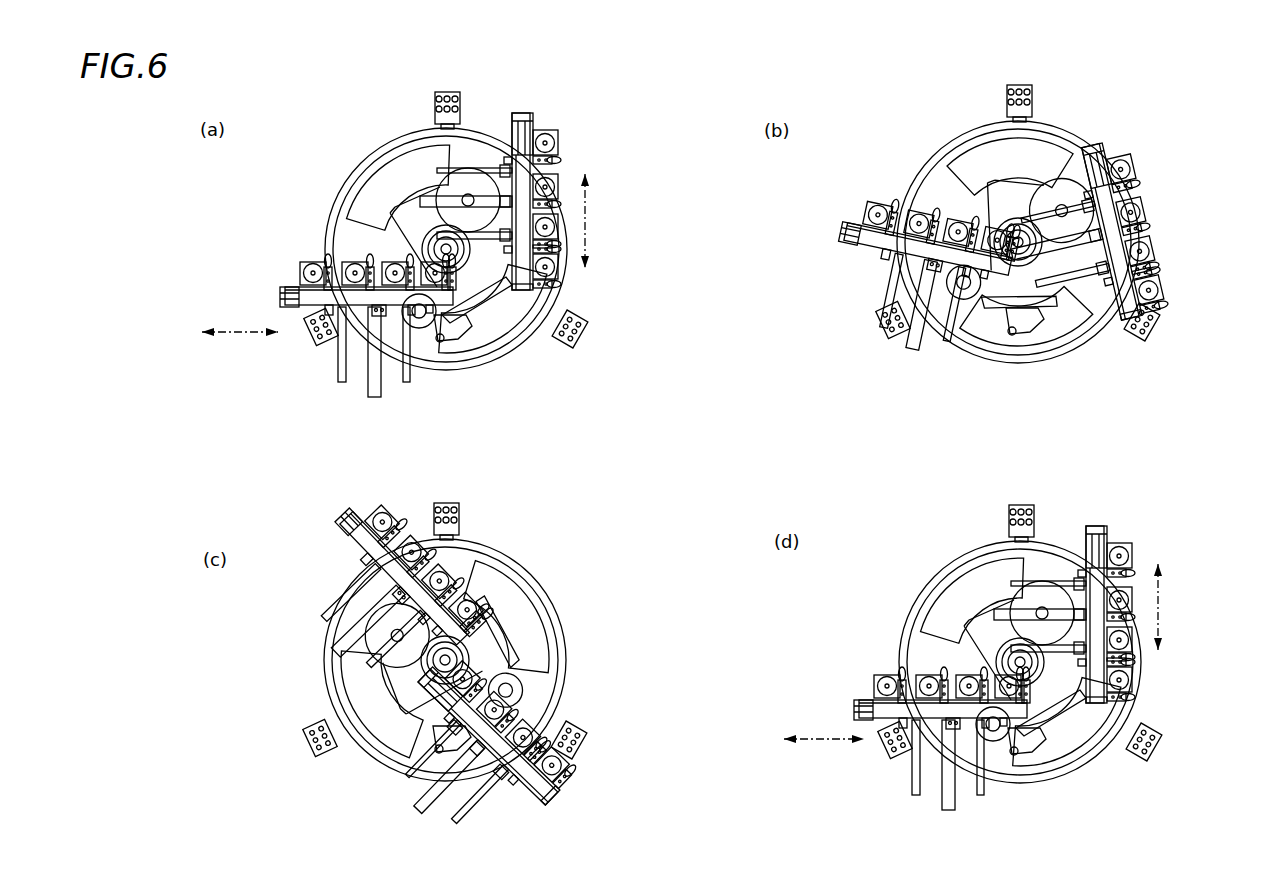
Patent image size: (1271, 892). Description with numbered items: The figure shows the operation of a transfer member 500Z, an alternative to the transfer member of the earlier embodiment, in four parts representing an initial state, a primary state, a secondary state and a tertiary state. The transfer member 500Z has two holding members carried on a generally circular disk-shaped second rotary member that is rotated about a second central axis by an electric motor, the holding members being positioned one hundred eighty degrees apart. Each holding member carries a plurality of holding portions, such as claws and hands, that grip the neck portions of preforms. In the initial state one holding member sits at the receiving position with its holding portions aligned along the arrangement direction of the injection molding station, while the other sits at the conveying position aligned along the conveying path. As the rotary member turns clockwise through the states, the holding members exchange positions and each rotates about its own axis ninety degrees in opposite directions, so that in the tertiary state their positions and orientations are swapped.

The transfer member 500Z is at (608, 178).